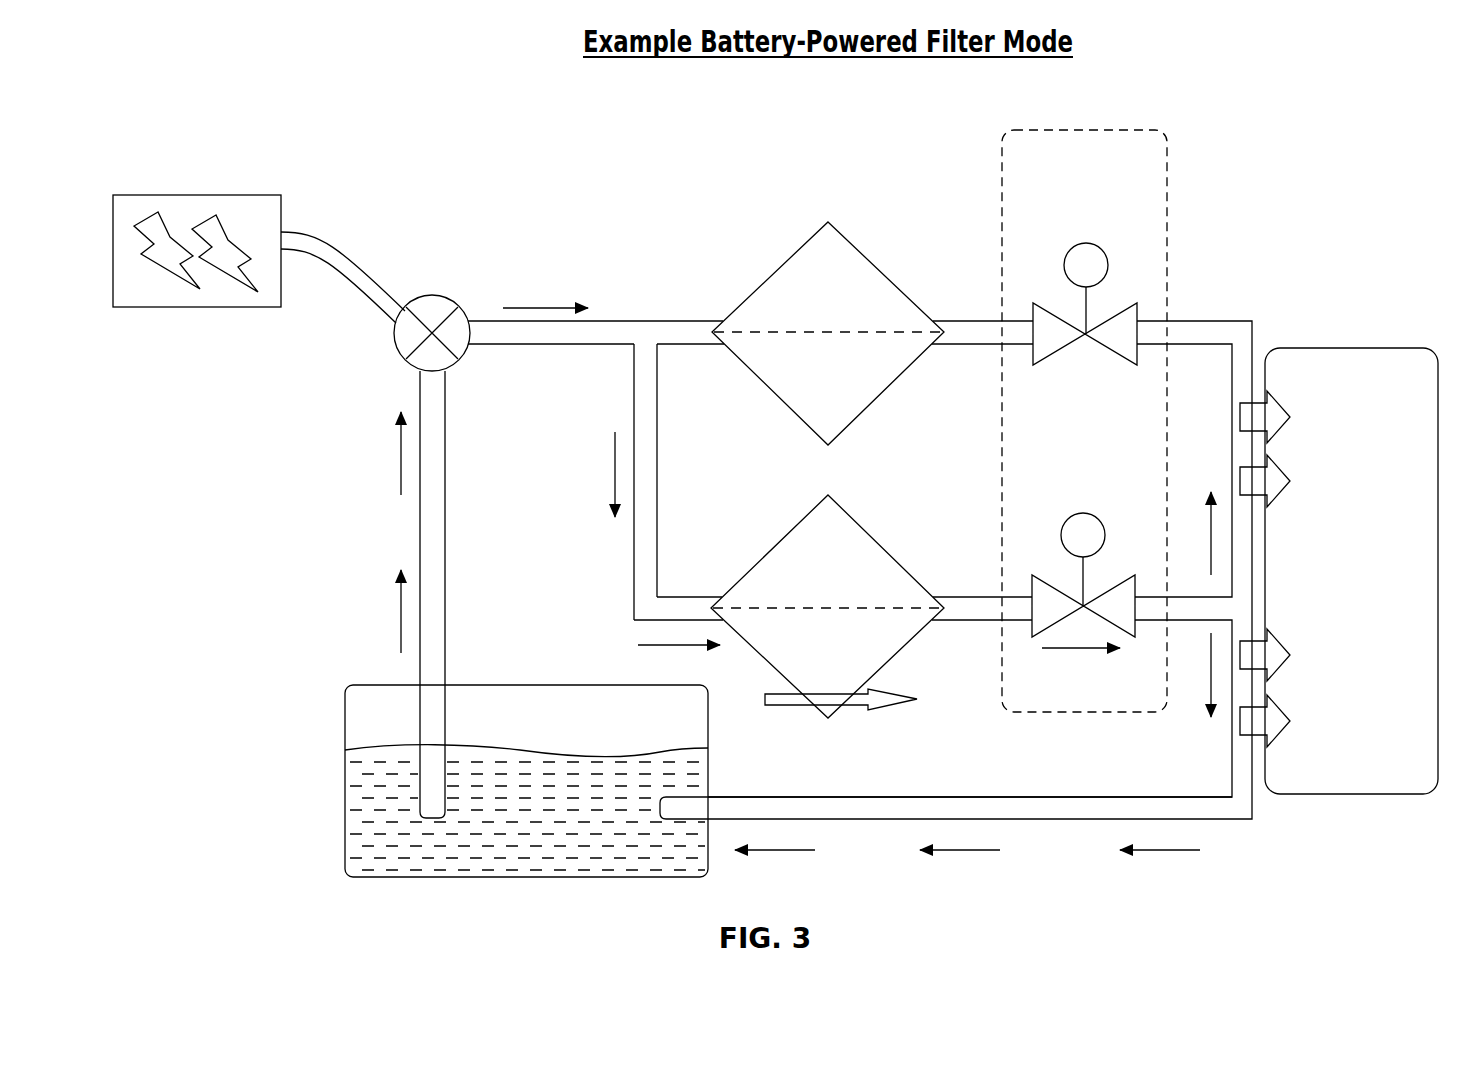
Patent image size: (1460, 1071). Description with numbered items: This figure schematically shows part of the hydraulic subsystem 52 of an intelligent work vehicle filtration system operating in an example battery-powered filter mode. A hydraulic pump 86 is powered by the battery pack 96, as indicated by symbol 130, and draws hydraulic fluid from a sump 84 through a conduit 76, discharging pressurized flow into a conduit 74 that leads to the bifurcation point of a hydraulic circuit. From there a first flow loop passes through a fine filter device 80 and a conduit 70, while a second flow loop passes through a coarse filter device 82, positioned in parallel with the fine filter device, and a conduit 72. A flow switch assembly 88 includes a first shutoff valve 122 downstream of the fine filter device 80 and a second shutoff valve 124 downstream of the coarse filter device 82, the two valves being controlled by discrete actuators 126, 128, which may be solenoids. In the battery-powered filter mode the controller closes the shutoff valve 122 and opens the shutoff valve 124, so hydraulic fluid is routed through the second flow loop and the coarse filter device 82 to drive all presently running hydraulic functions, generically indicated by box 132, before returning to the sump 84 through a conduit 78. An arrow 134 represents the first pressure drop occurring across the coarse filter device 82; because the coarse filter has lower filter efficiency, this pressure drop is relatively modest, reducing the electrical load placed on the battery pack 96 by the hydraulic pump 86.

The hydraulic subsystem 52 is at (468, 167).
The battery pack 96 is at (155, 195).
The symbol 130 is at (213, 226).
The hydraulic pump 86 is at (431, 294).
The conduit 74 is at (538, 348).
The conduit 76 is at (446, 541).
The fine filter device 80 is at (771, 283).
The coarse filter device 82 is at (776, 550).
The conduit 70 is at (967, 346).
The conduit 72 is at (968, 596).
The flow switch assembly 88 is at (1070, 231).
The first shutoff valve 122 is at (1137, 305).
The second shutoff valve 124 is at (1118, 577).
The actuator 126 is at (1063, 265).
The actuator 128 is at (1061, 537).
The box 132 is at (1357, 348).
The arrow 134 is at (782, 706).
The sump 84 is at (346, 718).
The conduit 78 is at (967, 796).